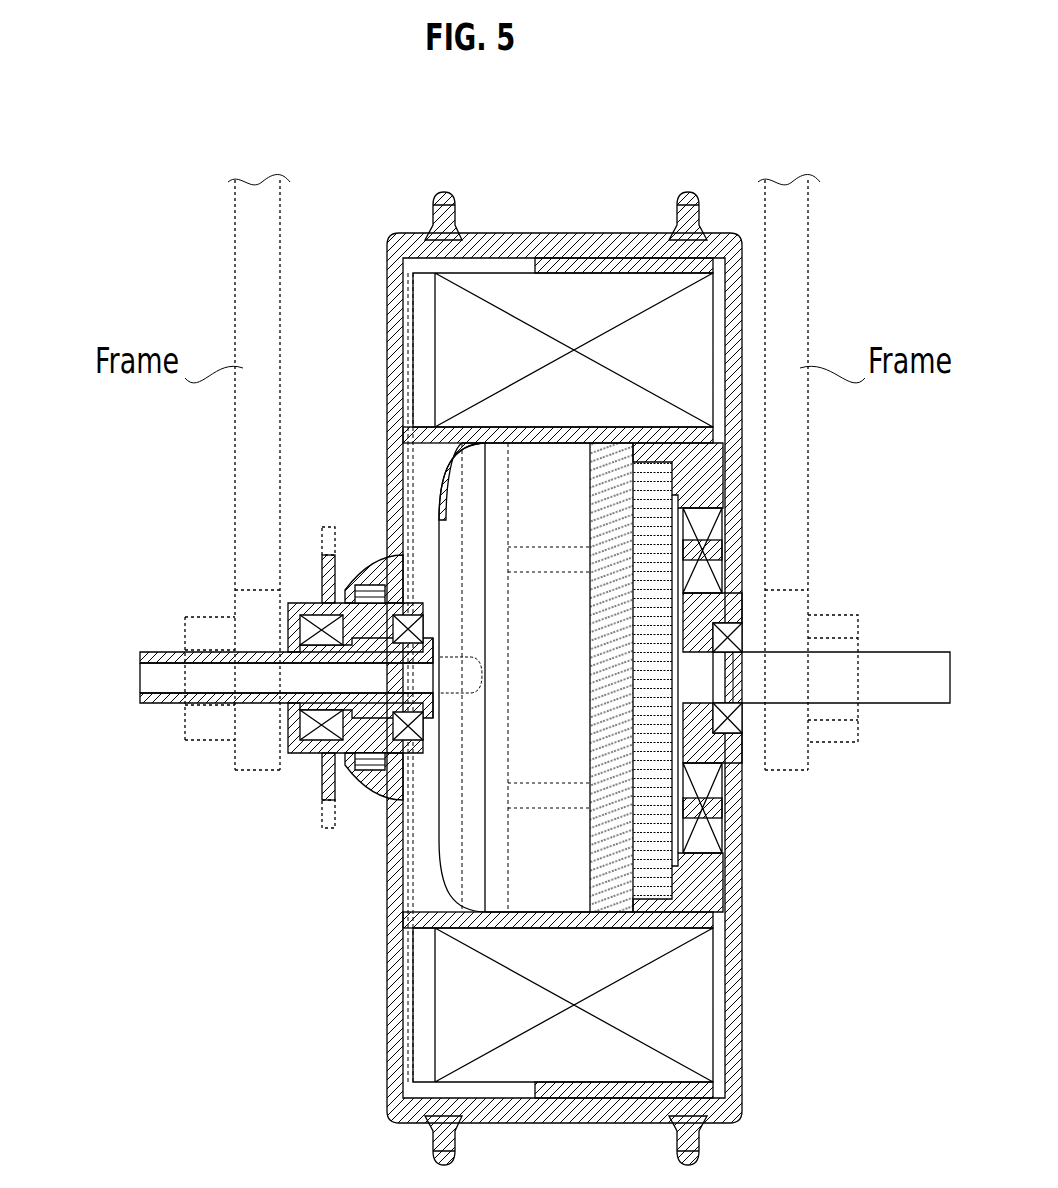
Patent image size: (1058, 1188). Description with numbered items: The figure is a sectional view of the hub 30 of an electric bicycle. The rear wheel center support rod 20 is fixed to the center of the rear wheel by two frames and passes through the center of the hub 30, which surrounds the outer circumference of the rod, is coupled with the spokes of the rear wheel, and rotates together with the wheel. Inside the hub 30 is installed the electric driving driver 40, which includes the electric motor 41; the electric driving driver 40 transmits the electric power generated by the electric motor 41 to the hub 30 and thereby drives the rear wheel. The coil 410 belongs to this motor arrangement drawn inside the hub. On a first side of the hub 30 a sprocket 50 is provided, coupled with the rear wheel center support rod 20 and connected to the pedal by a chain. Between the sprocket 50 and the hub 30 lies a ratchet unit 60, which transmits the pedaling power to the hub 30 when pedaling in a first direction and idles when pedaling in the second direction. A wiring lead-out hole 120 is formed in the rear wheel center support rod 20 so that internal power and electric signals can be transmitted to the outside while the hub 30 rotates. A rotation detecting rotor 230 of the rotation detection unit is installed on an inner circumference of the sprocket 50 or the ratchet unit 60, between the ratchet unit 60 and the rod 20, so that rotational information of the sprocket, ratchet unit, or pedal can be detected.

The rear wheel center support rod 20 is at (502, 659).
The hub 30 is at (565, 240).
The electric driving driver 40 is at (765, 830).
The electric motor 41 is at (388, 893).
The coil 410 is at (683, 320).
The sprocket 50 is at (320, 803).
The ratchet unit 60 is at (318, 592).
The wiring lead-out hole 120 is at (146, 680).
The rotation detecting rotor 230 is at (317, 770).